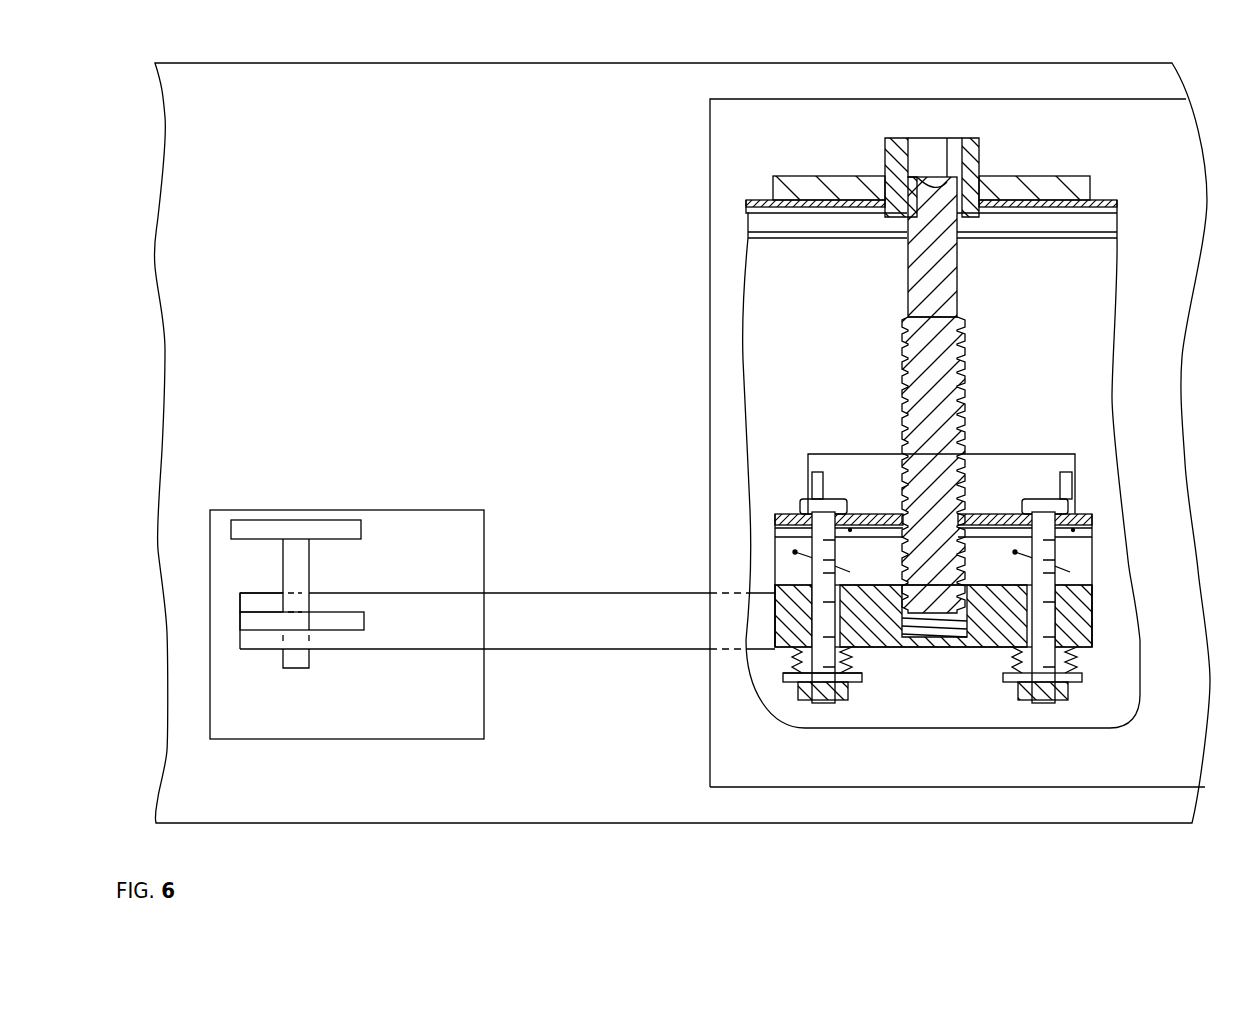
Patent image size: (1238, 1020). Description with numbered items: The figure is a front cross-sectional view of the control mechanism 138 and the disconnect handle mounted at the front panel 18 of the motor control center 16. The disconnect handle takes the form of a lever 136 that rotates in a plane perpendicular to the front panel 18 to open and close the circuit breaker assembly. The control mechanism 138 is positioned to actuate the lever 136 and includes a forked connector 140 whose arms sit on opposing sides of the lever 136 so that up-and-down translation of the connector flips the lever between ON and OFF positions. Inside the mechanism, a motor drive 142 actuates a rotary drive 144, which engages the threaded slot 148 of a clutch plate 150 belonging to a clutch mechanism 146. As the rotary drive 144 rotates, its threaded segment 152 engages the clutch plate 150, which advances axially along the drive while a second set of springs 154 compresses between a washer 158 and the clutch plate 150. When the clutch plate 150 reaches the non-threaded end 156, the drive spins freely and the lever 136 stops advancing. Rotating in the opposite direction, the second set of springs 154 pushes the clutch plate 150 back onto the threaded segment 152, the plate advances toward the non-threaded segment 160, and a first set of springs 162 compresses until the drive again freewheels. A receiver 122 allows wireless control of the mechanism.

The panel 16 is at (164, 168).
The front panel 18 is at (399, 308).
The receiver 122 is at (803, 670).
The lever 136 is at (340, 518).
The control mechanism 138 is at (694, 168).
The forked connector 140 is at (577, 590).
The motor drive 142 is at (968, 135).
The rotary drive 144 is at (978, 348).
The clutch mechanism 146 is at (1085, 486).
The threaded slot 148 is at (985, 645).
The clutch plate 150 is at (1095, 635).
The threaded segment 152 is at (905, 392).
The second set of springs 154 is at (853, 660).
The non-threaded end 156 is at (913, 597).
The washer 158 is at (1067, 687).
The non-threaded segment 160 is at (912, 284).
The first set of springs 162 is at (1085, 575).